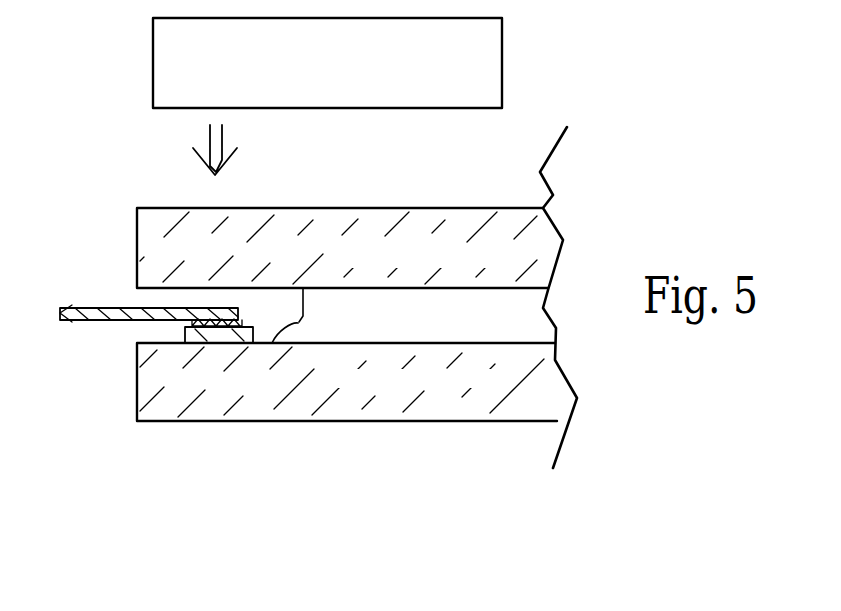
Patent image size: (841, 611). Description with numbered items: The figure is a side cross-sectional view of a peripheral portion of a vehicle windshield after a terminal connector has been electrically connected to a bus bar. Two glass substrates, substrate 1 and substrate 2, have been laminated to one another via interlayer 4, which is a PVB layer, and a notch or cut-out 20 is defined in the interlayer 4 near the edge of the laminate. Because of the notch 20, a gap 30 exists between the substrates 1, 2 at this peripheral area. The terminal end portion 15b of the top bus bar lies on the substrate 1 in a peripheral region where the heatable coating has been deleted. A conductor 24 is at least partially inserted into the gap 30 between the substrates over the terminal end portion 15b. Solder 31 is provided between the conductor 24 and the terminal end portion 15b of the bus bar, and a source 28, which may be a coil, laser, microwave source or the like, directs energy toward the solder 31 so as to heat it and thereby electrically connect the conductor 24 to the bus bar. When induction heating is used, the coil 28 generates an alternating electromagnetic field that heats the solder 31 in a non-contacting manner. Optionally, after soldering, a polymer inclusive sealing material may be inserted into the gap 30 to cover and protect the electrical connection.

The source 28 is at (494, 78).
The substrate 2 is at (407, 233).
The substrate 1 is at (445, 412).
The interlayer 4 is at (515, 313).
The notch 20 is at (272, 343).
The gap 30 is at (273, 307).
The conductor 24 is at (95, 312).
The solder 31 is at (198, 320).
The terminal end portion 15b is at (222, 335).